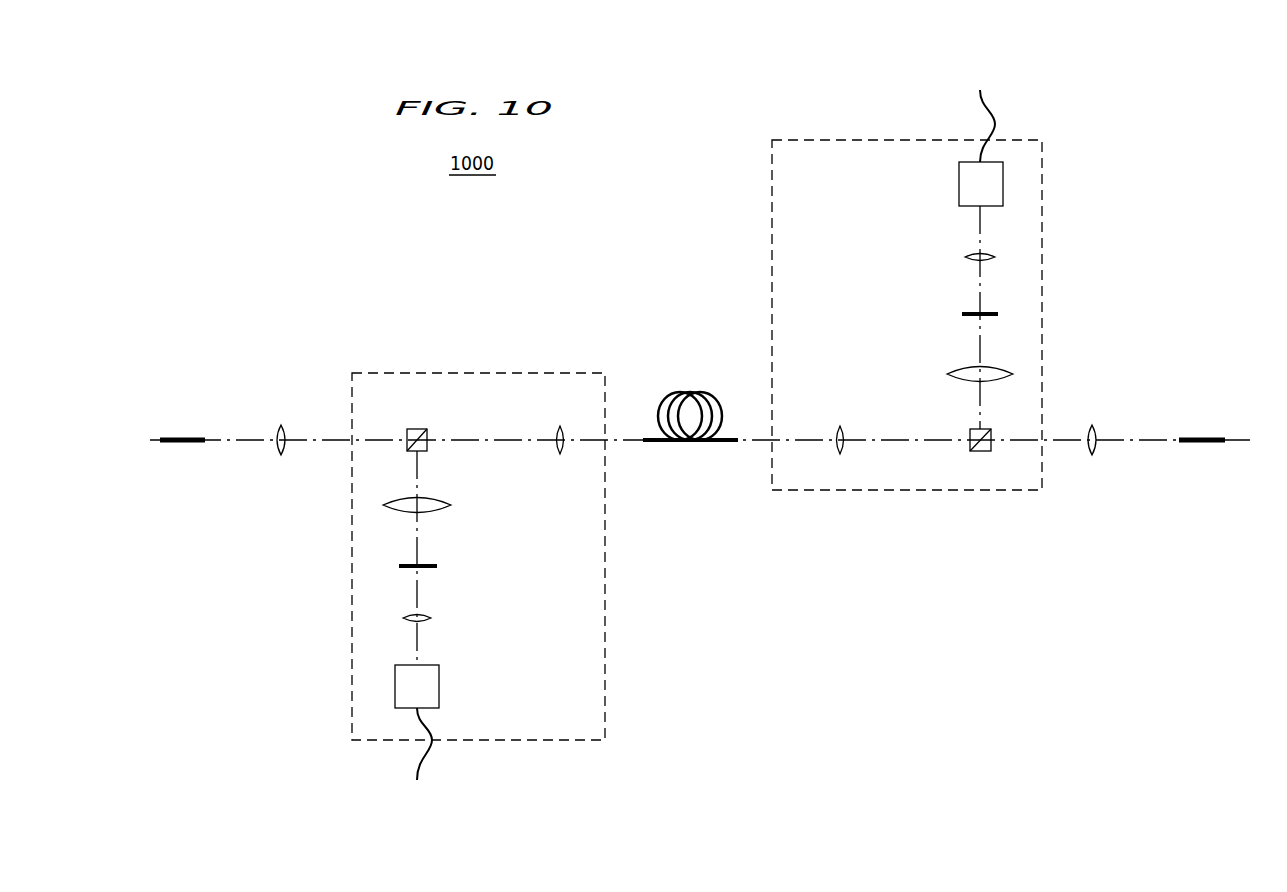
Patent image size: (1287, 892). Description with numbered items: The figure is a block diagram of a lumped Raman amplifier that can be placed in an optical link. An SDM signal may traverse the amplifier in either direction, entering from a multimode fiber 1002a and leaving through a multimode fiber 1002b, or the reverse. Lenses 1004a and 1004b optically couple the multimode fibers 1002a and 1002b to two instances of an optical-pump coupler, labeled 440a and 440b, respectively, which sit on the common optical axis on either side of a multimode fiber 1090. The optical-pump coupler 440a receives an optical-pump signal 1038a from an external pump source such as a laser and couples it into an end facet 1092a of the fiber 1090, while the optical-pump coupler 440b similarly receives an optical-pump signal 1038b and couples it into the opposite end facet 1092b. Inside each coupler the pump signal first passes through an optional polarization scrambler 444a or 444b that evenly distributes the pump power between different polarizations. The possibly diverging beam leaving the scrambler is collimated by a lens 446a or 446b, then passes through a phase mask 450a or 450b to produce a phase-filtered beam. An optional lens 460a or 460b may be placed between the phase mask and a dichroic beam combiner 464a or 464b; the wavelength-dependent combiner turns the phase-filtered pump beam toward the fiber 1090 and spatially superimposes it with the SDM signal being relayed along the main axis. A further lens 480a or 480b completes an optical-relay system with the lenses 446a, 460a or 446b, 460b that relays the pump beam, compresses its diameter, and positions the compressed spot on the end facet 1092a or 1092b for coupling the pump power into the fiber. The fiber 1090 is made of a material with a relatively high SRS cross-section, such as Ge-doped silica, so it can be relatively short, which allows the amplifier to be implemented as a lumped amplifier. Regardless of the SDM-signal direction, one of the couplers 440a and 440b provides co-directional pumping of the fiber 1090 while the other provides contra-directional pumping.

The multimode fiber 1002a is at (184, 437).
The multimode fiber 1002b is at (1203, 437).
The lens 1004a is at (283, 425).
The lens 1004b is at (1092, 425).
The optical-pump coupler 440a is at (605, 602).
The optical-pump coupler 440b is at (1043, 208).
The polarization scrambler 444a is at (439, 690).
The polarization scrambler 444b is at (958, 183).
The lens 446a is at (432, 618).
The lens 446b is at (965, 257).
The phase mask 450a is at (437, 566).
The phase mask 450b is at (962, 314).
The lens 460a is at (452, 505).
The lens 460b is at (947, 374).
The dichroic beam combiner 464a is at (426, 430).
The dichroic beam combiner 464b is at (970, 449).
The lens 480a is at (560, 426).
The lens 480b is at (840, 426).
The optical-pump signal 1038a is at (417, 788).
The optical-pump signal 1038b is at (980, 42).
The multimode fiber 1090 is at (690, 443).
The end facet 1092a is at (635, 434).
The end facet 1092b is at (745, 446).